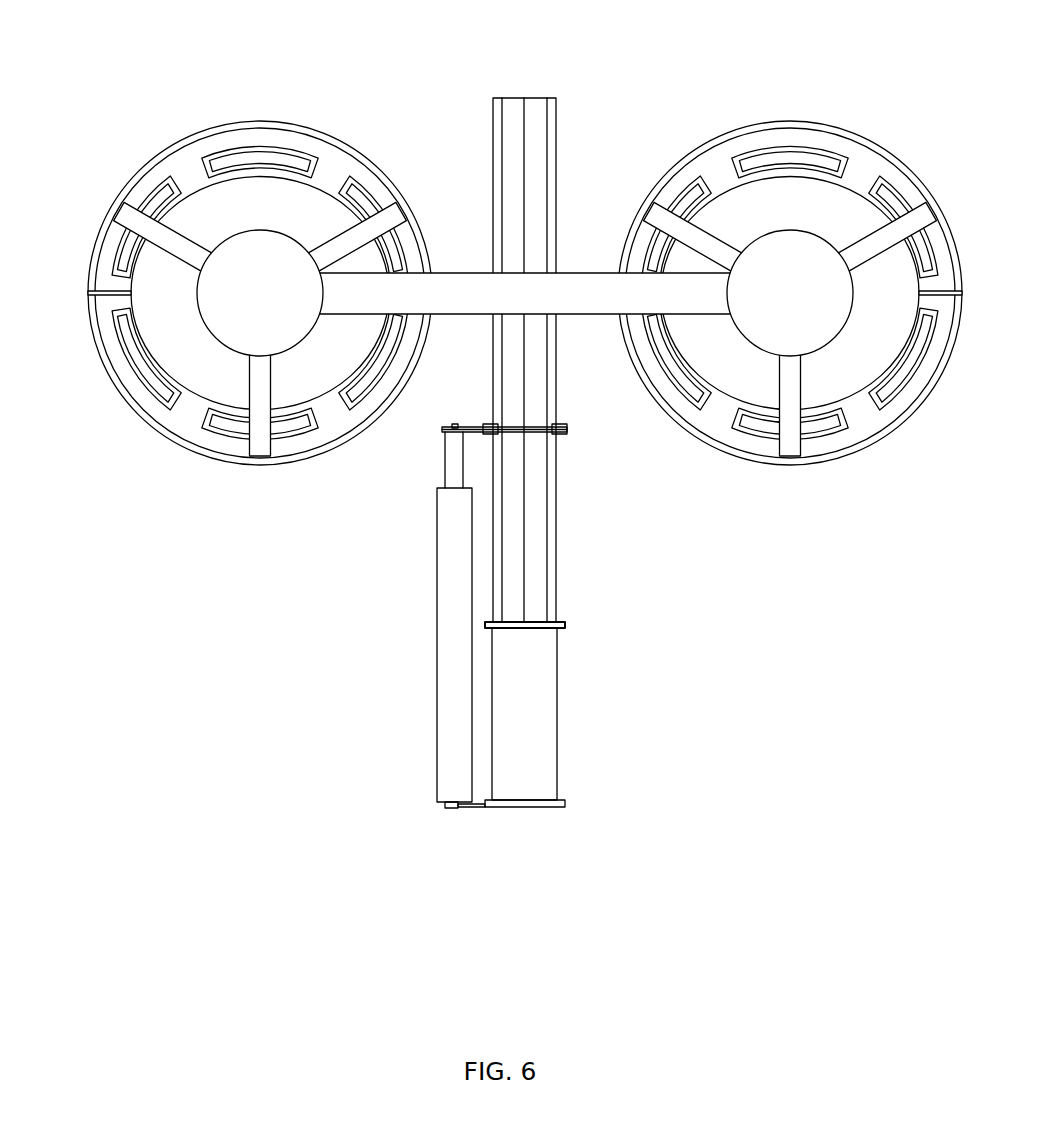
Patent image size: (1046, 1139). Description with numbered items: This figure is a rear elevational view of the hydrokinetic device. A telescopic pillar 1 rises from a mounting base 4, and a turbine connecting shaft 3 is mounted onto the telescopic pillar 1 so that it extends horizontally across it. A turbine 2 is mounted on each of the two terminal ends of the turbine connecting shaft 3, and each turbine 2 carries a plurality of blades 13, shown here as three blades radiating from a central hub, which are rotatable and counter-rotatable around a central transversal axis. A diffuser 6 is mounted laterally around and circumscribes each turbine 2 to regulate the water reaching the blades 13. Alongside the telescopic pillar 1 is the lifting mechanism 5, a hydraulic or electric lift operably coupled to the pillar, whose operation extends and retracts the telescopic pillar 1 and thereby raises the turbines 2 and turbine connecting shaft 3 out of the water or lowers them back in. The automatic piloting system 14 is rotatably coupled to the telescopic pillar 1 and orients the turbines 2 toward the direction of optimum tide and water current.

The telescopic pillar 1 is at (513, 122).
The turbines 2 is at (500, 278).
The turbine connecting shaft 3 is at (523, 292).
The mounting base 4 is at (540, 782).
The lifting mechanism 5 is at (459, 670).
The diffusers 6 is at (304, 120).
The blades 13 is at (130, 220).
The automatic piloting system 14 is at (548, 432).